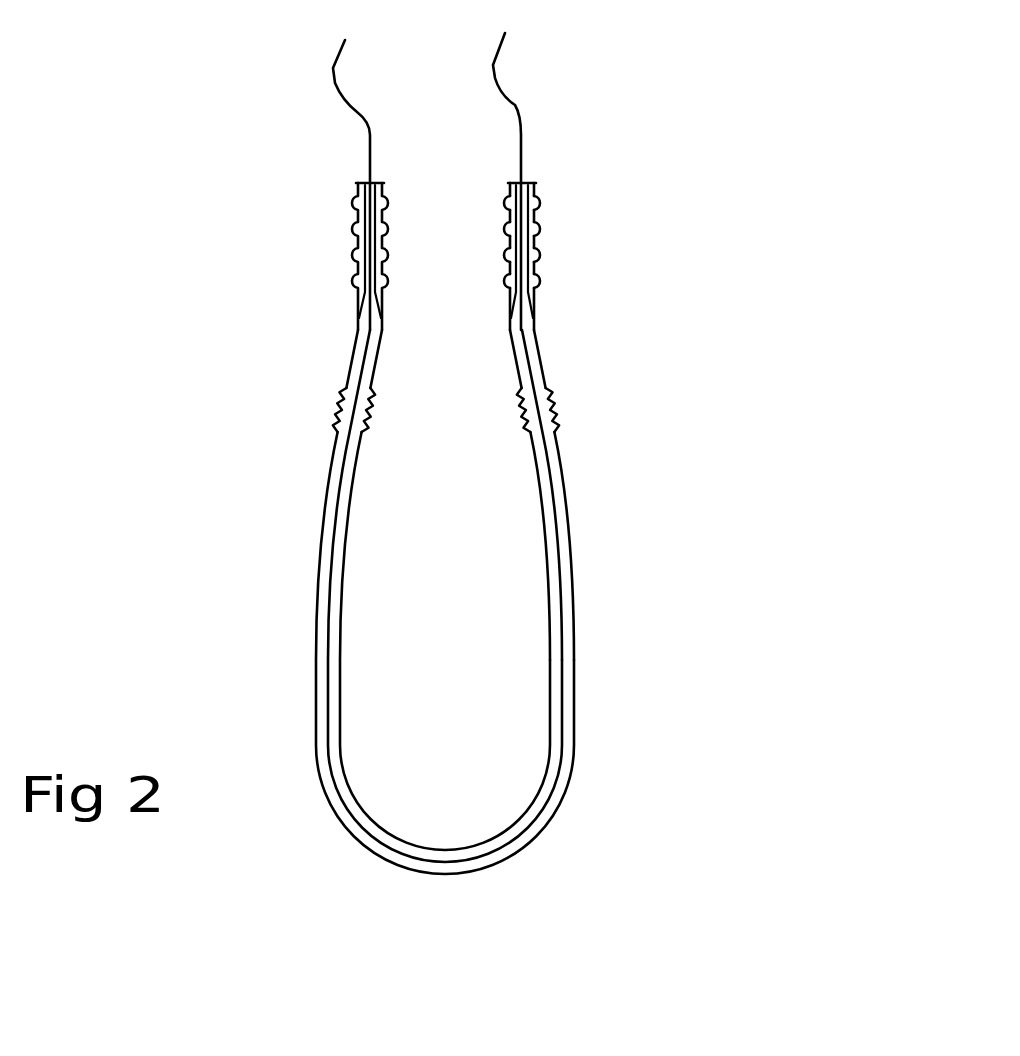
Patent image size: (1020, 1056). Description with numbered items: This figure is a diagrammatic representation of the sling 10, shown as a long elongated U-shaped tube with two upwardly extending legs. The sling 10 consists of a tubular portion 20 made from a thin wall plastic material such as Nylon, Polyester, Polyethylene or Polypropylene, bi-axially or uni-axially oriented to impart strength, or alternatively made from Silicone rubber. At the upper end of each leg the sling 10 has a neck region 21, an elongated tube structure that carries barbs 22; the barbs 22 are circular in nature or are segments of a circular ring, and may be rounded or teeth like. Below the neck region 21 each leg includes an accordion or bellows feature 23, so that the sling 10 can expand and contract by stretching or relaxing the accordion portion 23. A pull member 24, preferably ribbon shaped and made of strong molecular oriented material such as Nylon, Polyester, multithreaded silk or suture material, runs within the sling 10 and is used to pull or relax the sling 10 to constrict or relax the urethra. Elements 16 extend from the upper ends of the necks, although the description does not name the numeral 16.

The sling 10 is at (360, 242).
The electrical conductor wires 16 is at (333, 83).
The tubular portion 20 is at (482, 602).
The neck region 21 is at (533, 211).
The barbs 22 is at (537, 252).
The accordion or bellows feature 23 is at (332, 410).
The pull member 24 is at (550, 487).